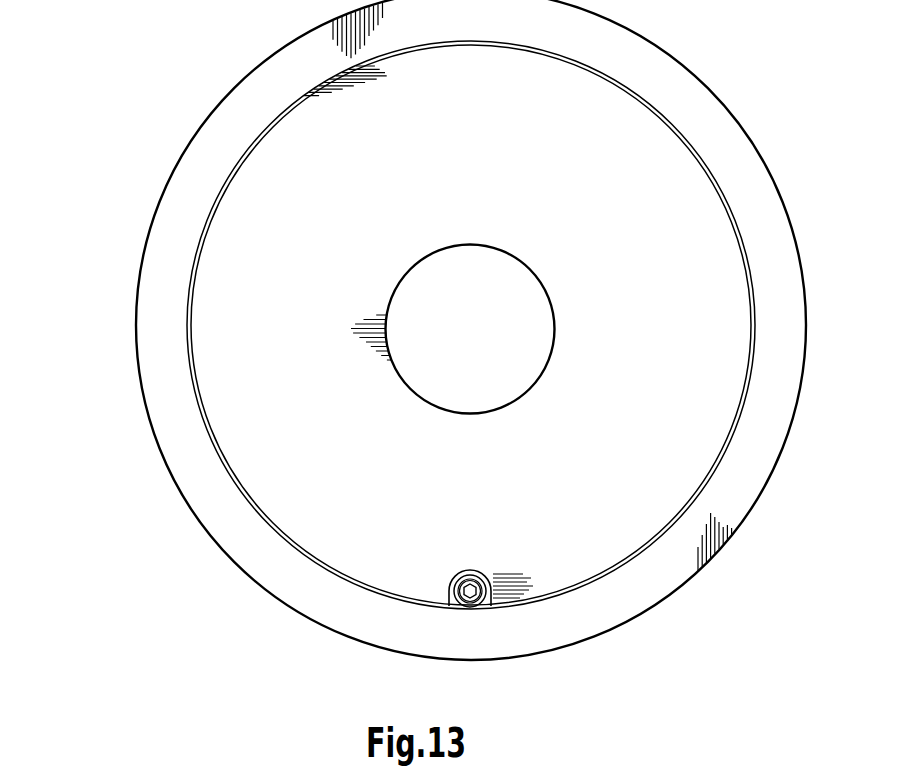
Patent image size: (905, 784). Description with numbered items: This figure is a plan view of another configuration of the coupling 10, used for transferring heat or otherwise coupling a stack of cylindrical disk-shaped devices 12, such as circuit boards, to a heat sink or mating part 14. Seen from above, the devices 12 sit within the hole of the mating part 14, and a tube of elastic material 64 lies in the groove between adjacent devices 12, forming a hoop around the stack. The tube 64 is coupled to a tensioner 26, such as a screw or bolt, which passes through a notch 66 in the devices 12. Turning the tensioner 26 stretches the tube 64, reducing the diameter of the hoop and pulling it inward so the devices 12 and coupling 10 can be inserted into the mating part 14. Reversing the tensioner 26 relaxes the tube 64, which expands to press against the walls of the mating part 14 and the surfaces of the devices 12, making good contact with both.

The coupling 10 is at (446, 350).
The cylindrical disk-shaped devices 12 is at (707, 208).
The heat sink or mating part 14 is at (660, 574).
The tensioner 26 is at (473, 597).
The tubes of elastic material 64 is at (737, 430).
The notches 66 is at (512, 604).